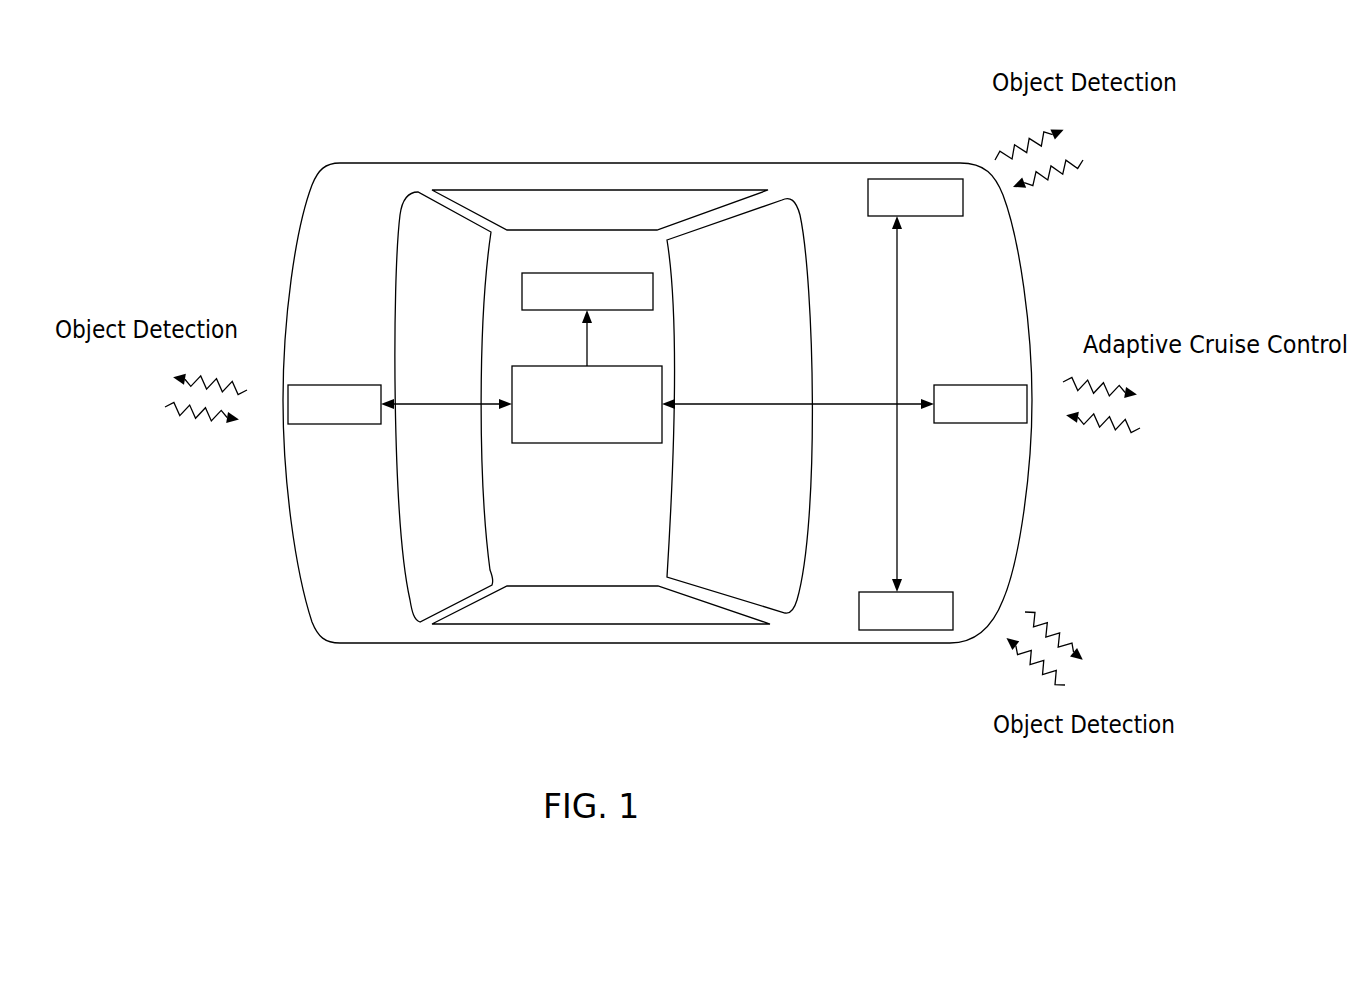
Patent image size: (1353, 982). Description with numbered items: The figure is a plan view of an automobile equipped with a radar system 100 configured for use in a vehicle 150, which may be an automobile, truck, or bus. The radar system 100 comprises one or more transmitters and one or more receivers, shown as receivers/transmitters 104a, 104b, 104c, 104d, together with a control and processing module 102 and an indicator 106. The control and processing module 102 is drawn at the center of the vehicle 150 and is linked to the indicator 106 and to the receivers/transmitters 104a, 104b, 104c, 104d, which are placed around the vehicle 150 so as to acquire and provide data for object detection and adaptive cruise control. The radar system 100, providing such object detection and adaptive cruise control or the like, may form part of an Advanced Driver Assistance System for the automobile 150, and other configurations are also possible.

The radar system 100 is at (418, 264).
The vehicle 150 is at (468, 165).
The control and processing module 102 is at (539, 444).
The indicator 106 is at (550, 273).
The receiver/transmitter 104a is at (297, 385).
The receiver/transmitter 104b is at (882, 179).
The receiver/transmitter 104c is at (938, 385).
The receiver/transmitter 104d is at (910, 592).